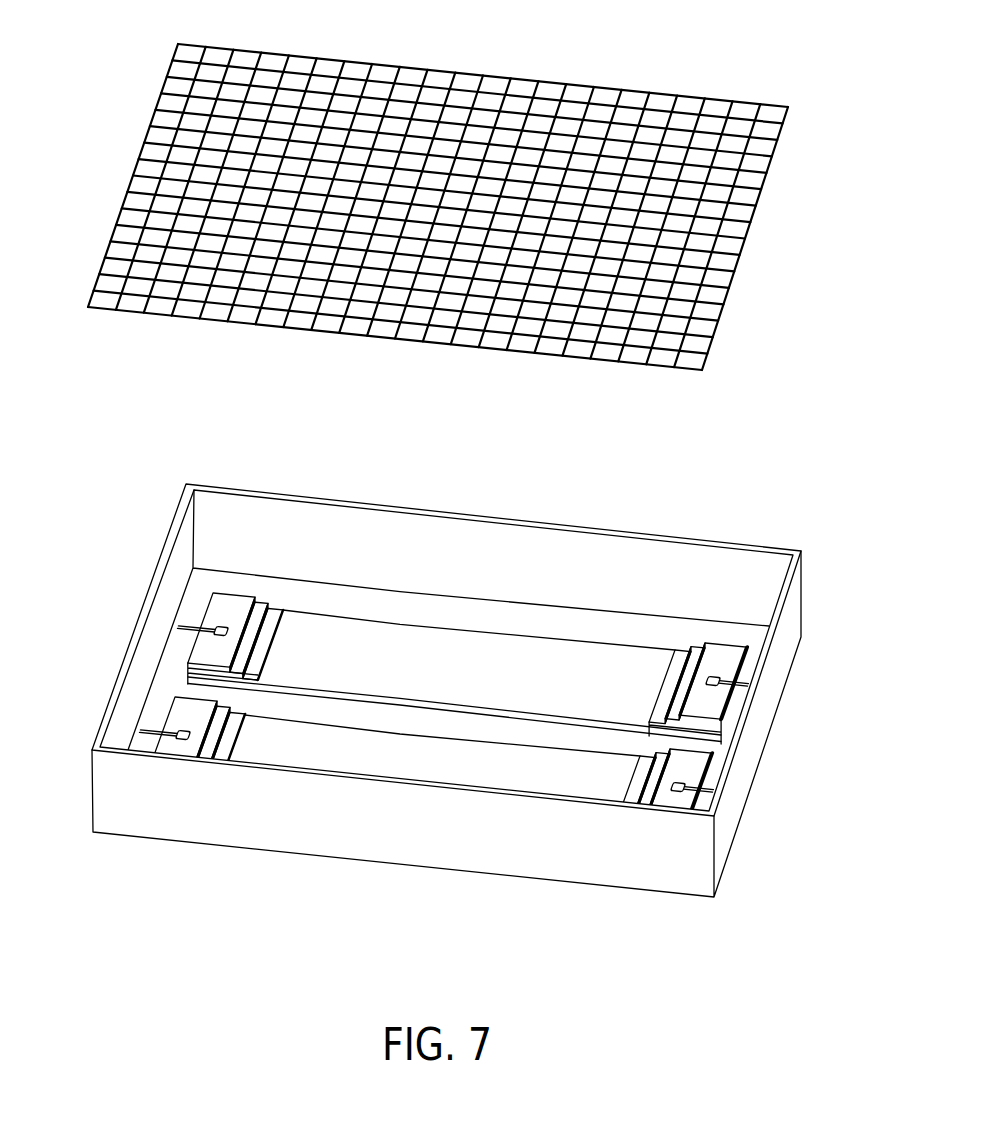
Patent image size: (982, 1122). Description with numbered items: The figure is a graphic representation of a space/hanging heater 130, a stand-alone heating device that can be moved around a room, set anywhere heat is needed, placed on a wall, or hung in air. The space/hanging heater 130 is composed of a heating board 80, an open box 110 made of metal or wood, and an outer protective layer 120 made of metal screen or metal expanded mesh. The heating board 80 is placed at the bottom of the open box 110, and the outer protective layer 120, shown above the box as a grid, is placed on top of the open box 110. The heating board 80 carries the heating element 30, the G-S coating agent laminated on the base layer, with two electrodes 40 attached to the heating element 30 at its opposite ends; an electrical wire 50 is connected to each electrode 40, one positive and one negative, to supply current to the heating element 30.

The outer protective layer 120 is at (523, 96).
The space/hanging heater 130 is at (420, 430).
The open box 110 is at (653, 557).
The heating board 80 is at (538, 617).
The heating element 30 is at (370, 640).
The electrode 40 is at (230, 610).
The electrical wire 50 is at (152, 720).